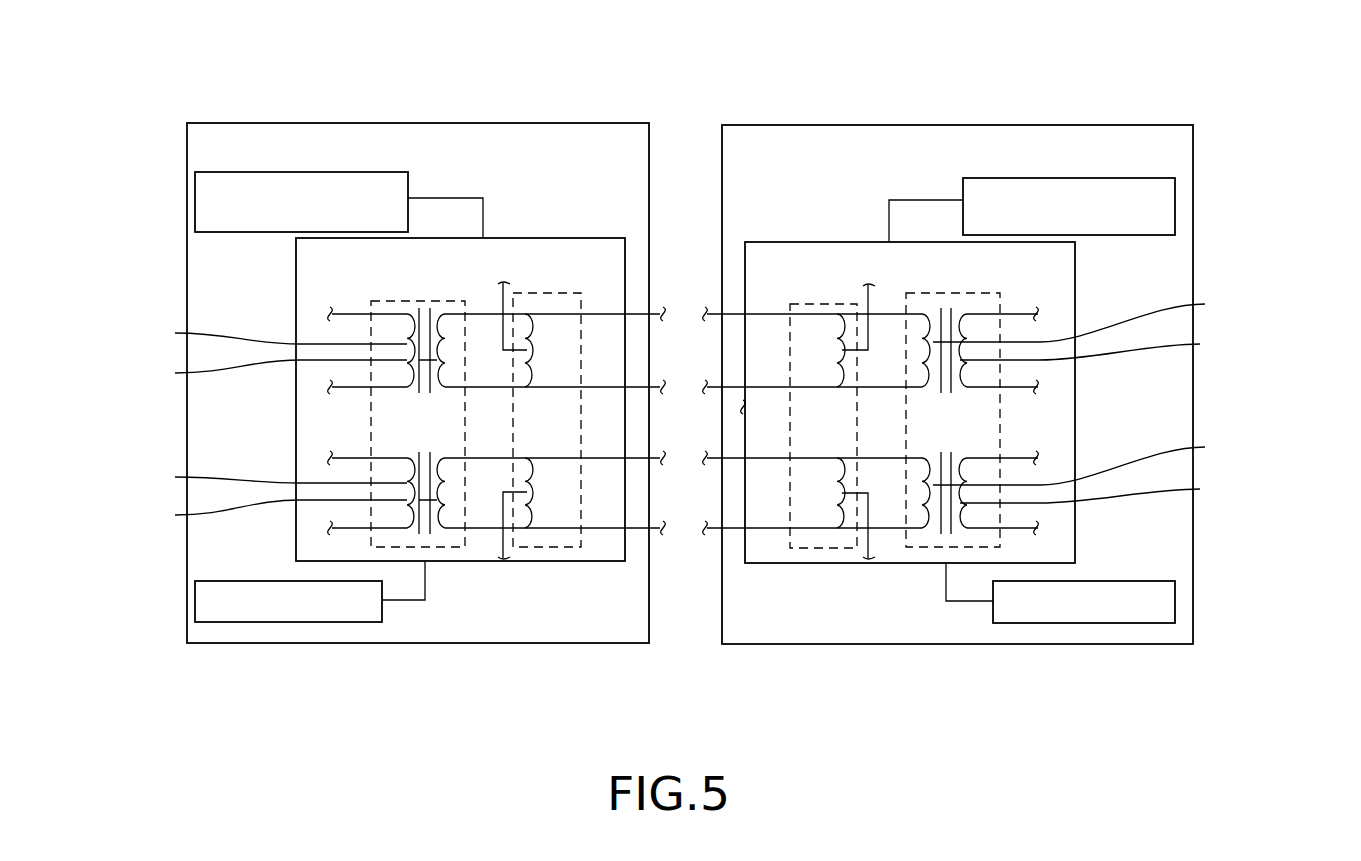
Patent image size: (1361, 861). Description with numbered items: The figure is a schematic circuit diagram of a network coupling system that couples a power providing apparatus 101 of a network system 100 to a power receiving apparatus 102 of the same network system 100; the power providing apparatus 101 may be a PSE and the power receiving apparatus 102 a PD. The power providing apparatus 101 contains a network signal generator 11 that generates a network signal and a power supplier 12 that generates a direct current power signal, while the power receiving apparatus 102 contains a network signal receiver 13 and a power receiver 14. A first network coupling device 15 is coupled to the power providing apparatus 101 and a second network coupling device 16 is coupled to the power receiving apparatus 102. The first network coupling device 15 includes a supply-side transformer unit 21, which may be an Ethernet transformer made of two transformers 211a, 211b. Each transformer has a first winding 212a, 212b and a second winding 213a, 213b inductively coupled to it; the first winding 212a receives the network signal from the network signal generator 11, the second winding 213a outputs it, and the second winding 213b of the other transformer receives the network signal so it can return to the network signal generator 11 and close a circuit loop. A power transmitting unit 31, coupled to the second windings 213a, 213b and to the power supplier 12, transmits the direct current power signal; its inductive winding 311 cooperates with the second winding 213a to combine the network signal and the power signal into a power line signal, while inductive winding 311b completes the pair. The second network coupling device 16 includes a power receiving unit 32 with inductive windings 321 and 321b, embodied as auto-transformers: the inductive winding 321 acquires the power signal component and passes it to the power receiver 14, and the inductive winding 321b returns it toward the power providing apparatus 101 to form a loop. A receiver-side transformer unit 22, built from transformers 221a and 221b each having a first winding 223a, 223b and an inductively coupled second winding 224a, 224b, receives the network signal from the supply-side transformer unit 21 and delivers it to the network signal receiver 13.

The network system 100 is at (201, 112).
The power providing apparatus 101 is at (270, 112).
The power receiving apparatus 102 is at (1066, 115).
The network signal generator 11 is at (380, 172).
The power supplier 12 is at (281, 622).
The network signal receiver 13 is at (1175, 200).
The power receiver 14 is at (1073, 623).
The first network coupling device 15 is at (534, 228).
The second network coupling device 16 is at (756, 230).
The supply-side transformer unit 21 is at (358, 302).
The transformer 211a is at (115, 315).
The first winding 212a is at (260, 331).
The second winding 213a is at (275, 373).
The transformer 211b is at (115, 460).
The first winding 212b is at (260, 476).
The second winding 213b is at (275, 514).
The receiver-side transformer unit 22 is at (1014, 283).
The transformer 221a is at (1262, 278).
The first winding 223a is at (1097, 315).
The second winding 224a is at (1111, 345).
The transformer 221b is at (1262, 430).
The first winding 223b is at (1097, 459).
The second winding 224b is at (1111, 489).
The power transmitting unit 31 is at (571, 565).
The first inductor 311 is at (524, 345).
The inductive winding 311b is at (530, 507).
The power receiving unit 32 is at (802, 565).
The third inductor 321 is at (840, 347).
The inductive winding 321b is at (842, 505).